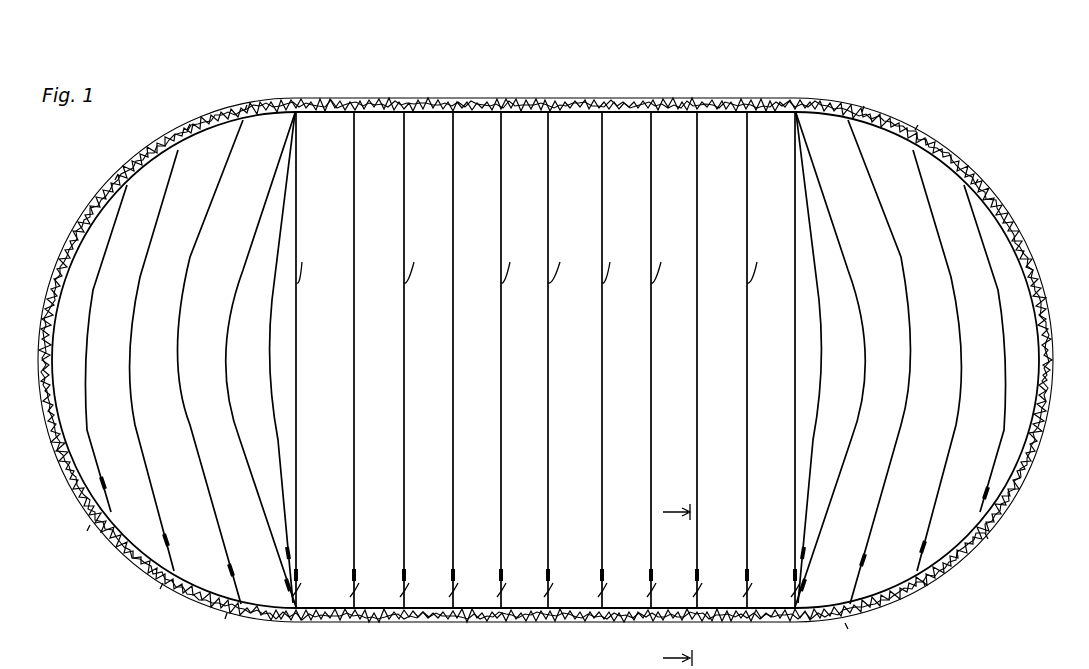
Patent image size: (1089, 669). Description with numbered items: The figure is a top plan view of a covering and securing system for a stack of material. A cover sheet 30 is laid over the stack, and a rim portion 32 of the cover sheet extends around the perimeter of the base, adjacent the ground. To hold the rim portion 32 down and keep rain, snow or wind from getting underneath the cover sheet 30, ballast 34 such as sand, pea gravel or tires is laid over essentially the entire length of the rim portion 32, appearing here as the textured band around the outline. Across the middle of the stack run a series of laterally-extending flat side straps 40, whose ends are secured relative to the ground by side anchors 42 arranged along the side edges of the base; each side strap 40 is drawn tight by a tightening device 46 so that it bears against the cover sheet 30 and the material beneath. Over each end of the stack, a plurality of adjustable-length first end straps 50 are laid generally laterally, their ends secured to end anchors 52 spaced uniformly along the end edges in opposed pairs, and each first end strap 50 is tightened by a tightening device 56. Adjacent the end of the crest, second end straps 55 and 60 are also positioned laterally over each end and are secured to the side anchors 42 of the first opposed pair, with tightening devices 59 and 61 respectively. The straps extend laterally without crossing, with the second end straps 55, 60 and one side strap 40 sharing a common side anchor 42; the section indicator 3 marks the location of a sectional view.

The cover sheet 30 is at (530, 108).
The rim portion 32 is at (330, 110).
The ballast 34 is at (440, 106).
The flat side straps 40 is at (338, 280).
The side anchors 42 is at (297, 110).
The tightening devices 46 is at (352, 575).
The first end straps 50 is at (90, 318).
The end anchors 52 is at (188, 128).
The second end strap 55 is at (223, 330).
The tightening device 56 is at (105, 484).
The tightening device 59 is at (287, 585).
The second end strap 60 is at (268, 332).
The tightening device 61 is at (289, 550).
The section line 3- 3 is at (669, 585).